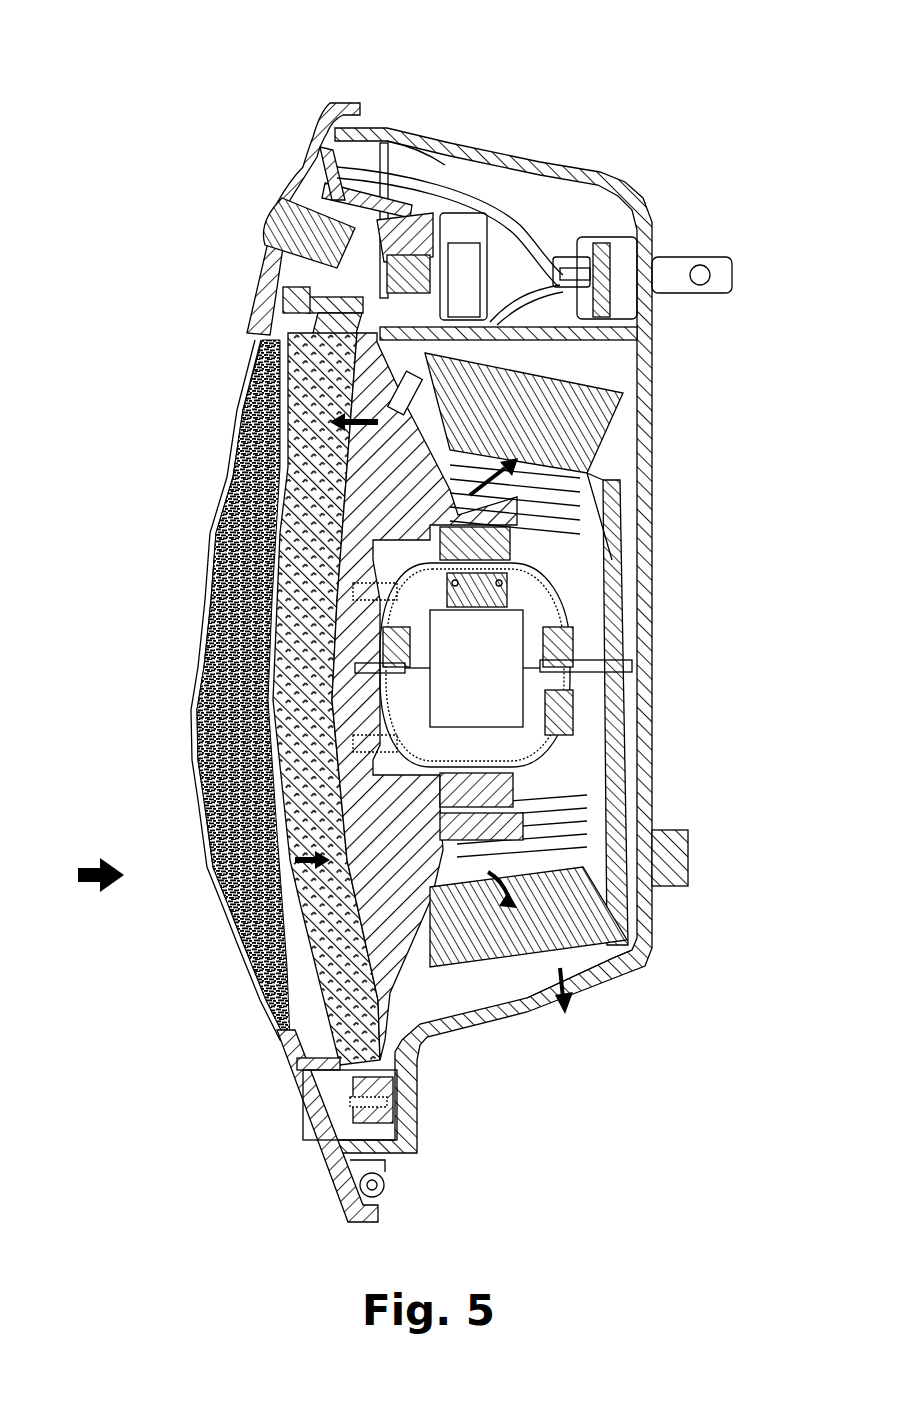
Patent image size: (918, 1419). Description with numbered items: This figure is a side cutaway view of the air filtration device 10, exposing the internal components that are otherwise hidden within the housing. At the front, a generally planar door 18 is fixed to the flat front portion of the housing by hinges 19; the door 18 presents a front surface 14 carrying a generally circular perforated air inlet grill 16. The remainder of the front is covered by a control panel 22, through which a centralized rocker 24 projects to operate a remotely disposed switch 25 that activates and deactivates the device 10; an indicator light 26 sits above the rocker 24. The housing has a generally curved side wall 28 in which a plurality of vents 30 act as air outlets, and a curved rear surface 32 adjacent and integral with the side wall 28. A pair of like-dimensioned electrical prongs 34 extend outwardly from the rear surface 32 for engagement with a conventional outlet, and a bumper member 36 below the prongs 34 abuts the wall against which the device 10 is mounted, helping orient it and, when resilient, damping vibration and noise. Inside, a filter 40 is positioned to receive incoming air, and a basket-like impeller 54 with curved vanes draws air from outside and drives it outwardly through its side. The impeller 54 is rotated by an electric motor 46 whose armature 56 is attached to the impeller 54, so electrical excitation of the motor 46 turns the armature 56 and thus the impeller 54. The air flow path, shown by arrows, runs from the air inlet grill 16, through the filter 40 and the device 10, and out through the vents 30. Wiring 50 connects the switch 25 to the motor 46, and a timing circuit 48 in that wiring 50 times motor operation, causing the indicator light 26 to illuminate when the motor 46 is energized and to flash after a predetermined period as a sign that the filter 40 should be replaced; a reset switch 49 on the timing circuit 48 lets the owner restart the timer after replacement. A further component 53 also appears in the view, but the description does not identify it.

The air filtration device 10 is at (628, 160).
The front surface 14 is at (162, 705).
The perforated air inlet grill 16 is at (195, 760).
The door 18 is at (296, 1090).
The hinges 19 is at (385, 1168).
The control panel 22 is at (262, 292).
The rocker 24 is at (265, 218).
The switch 25 is at (408, 138).
The indicator light 26 is at (308, 143).
The curved side wall 28 is at (515, 1017).
The vents 30 is at (565, 812).
The rear surface 32 is at (646, 512).
The electrical prongs 34 is at (665, 262).
The bumper member 36 is at (690, 862).
The filter 40 is at (235, 470).
The electric motor 46 is at (568, 625).
The timing circuit 48 is at (467, 240).
The reset switch 49 is at (414, 148).
The wiring 50 is at (538, 203).
The housing 53 is at (645, 420).
The impeller 54 is at (605, 992).
The armature 56 is at (600, 670).